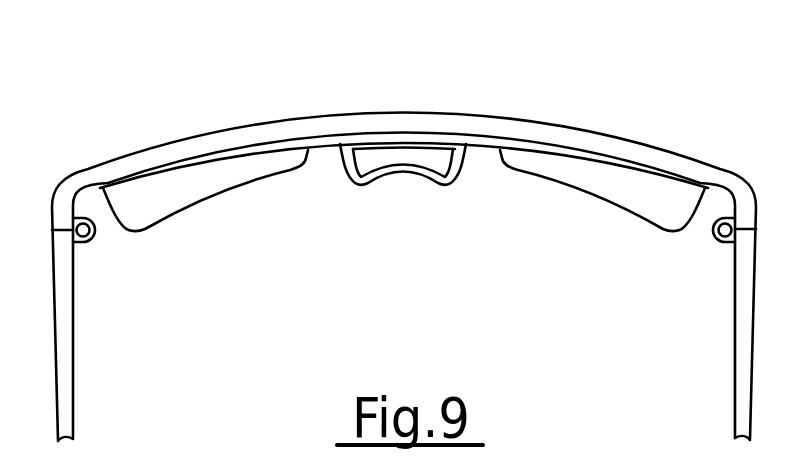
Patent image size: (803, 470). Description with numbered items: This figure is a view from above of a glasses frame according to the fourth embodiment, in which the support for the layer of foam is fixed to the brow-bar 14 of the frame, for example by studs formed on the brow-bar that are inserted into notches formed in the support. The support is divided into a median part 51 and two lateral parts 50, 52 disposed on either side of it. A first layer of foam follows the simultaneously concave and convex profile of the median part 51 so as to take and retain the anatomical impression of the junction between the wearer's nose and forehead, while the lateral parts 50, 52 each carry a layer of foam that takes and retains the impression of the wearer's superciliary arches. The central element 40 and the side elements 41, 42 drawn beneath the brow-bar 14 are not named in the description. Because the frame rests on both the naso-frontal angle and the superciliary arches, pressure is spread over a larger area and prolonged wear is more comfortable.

The brow-bar 14 is at (305, 128).
The lateral part 50 is at (432, 138).
The median part 51 is at (220, 138).
The lateral part 52 is at (612, 160).
The central tab 40 is at (396, 161).
The left pocket 41 is at (168, 192).
The right pocket 42 is at (600, 186).